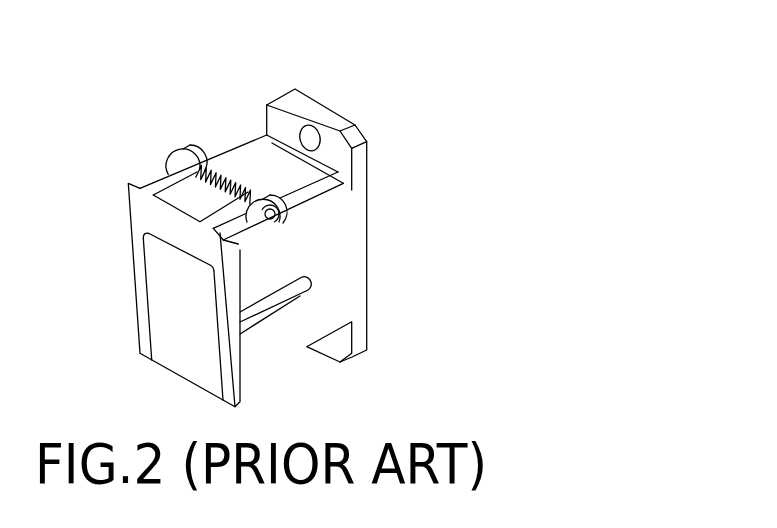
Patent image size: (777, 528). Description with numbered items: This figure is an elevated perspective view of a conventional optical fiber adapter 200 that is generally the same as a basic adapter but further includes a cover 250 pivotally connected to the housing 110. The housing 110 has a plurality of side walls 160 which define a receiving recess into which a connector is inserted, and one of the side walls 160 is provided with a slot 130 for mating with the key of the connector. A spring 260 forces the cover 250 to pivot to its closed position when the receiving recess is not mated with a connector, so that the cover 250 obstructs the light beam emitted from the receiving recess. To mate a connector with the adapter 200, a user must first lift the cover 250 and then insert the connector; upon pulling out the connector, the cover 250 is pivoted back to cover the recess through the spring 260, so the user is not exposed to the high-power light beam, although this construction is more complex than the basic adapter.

The conventional fiber adapter 200 is at (350, 97).
The housing 110 is at (245, 142).
The spring 260 is at (228, 180).
The cover 250 is at (170, 323).
The slot 130 is at (278, 295).
The side walls 160 is at (260, 357).